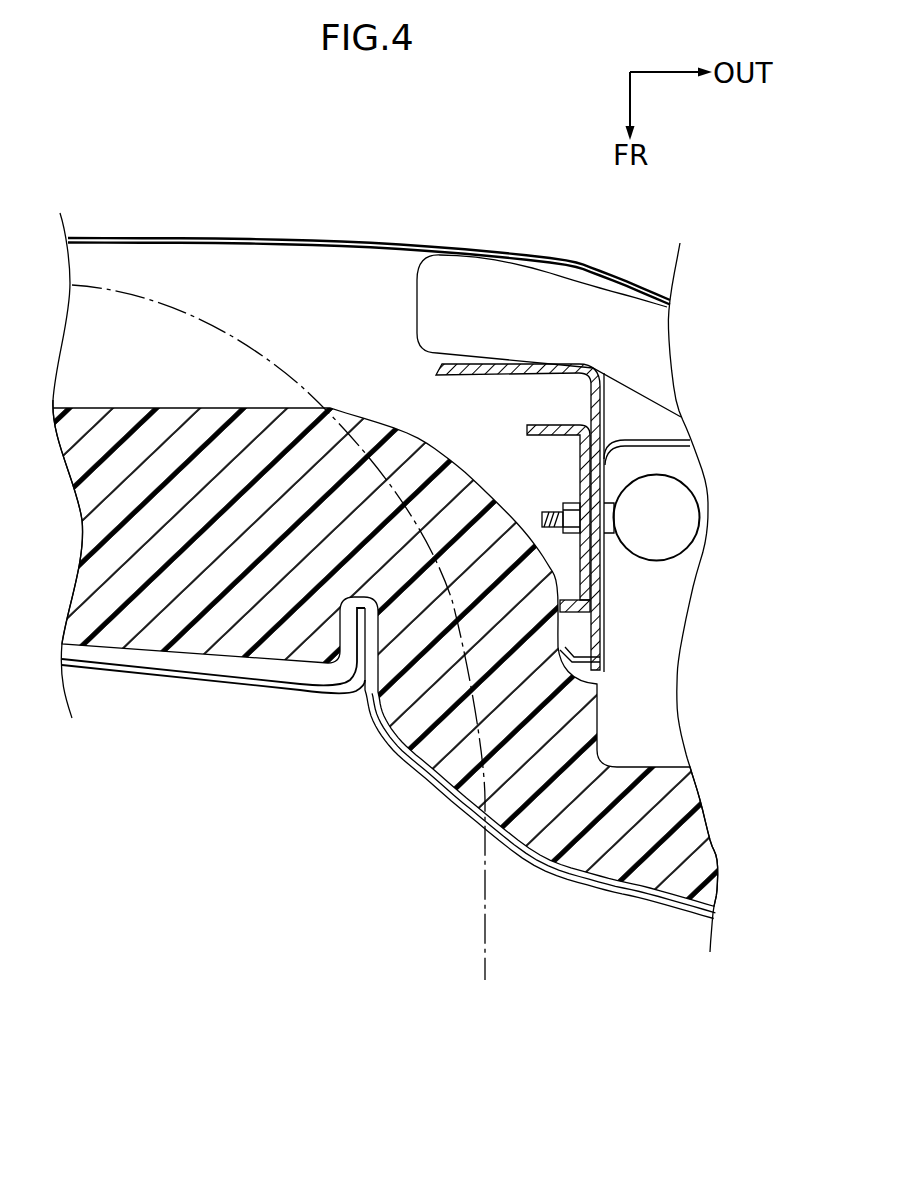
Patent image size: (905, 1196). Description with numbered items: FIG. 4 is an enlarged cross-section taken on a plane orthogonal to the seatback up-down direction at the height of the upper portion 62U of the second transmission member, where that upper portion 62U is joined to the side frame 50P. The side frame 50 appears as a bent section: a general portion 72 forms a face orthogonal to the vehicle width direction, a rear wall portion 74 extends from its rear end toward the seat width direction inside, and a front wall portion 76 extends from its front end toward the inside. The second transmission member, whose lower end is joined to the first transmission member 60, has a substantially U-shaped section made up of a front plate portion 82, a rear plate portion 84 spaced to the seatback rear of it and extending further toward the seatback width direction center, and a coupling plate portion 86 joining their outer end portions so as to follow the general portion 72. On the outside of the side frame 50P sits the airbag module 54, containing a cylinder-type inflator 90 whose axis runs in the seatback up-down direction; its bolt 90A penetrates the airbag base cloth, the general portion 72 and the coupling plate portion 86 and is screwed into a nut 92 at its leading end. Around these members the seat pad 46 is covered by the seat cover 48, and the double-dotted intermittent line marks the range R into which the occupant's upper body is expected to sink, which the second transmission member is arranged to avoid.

The seat pad 46 is at (660, 893).
The seat cover 48 is at (137, 675).
The side frame 50 is at (374, 327).
The side frame 50P is at (610, 411).
The airbag module 54 is at (674, 571).
The first transmission member 60 is at (480, 482).
The upper portion of the second transmission member 62U is at (480, 482).
The general portion 72 is at (602, 643).
The rear wall portion 74 is at (497, 363).
The front wall portion 76 is at (577, 665).
The front plate portion 82 is at (570, 600).
The rear plate portion 84 is at (536, 488).
The coupling plate portion 86 is at (578, 442).
The inflator 90 is at (629, 504).
The bolt 90A is at (542, 516).
The nut 92 is at (577, 503).
The range R is at (487, 903).